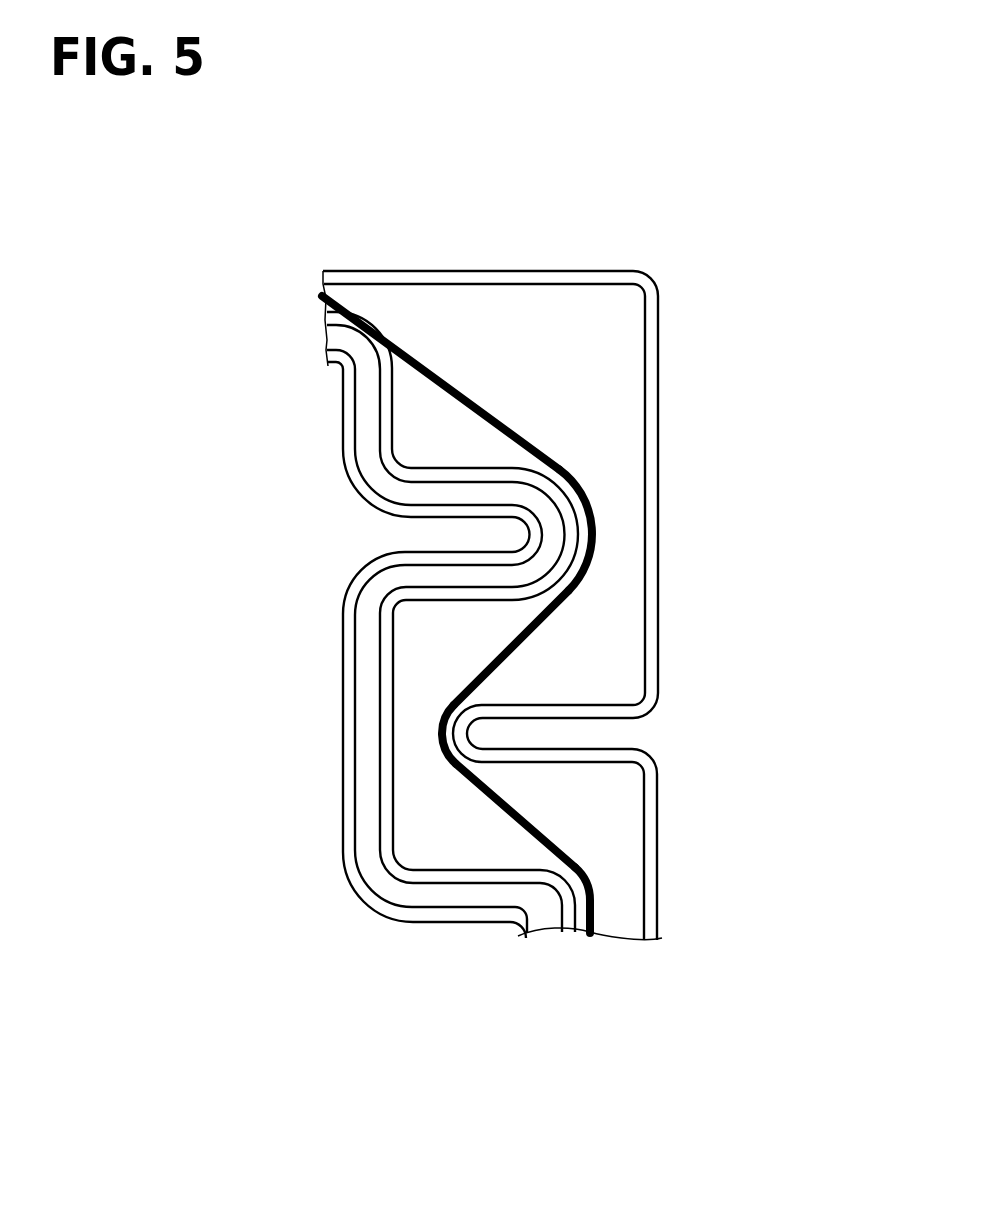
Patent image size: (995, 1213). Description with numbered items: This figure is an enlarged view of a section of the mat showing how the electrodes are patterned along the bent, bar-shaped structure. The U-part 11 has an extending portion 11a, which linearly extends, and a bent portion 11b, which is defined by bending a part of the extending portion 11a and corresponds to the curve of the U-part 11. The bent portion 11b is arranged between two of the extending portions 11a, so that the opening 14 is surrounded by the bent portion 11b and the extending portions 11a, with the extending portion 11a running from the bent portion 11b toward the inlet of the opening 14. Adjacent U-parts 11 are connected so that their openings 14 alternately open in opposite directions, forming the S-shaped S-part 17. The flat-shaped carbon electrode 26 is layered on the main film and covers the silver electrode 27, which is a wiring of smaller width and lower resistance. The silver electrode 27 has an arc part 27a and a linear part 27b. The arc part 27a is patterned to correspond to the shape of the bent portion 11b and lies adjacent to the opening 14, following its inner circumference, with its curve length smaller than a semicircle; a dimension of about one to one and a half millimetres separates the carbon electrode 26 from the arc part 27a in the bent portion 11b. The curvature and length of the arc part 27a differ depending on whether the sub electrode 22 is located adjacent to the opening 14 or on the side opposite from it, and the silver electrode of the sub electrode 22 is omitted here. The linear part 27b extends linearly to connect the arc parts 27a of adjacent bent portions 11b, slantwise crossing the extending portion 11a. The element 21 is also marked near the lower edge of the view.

The U-part 11 is at (512, 579).
The extending portion 11a is at (512, 578).
The bent portion 11b is at (612, 507).
The opening 14 is at (447, 535).
The S-part 17 is at (350, 572).
The first member 21 is at (617, 907).
The sub electrode 22 is at (547, 910).
The carbon electrode 26 is at (393, 663).
The silver electrode 27 is at (506, 614).
The arc part 27a is at (594, 548).
The linear part 27b is at (477, 397).